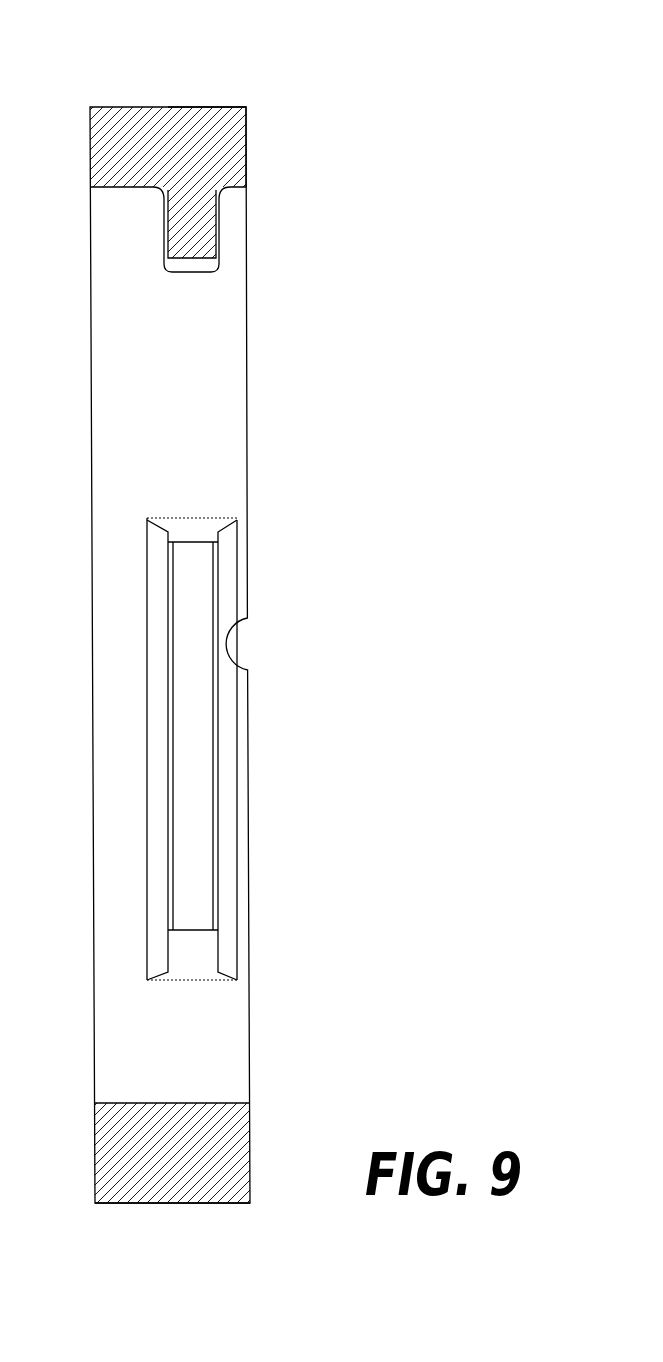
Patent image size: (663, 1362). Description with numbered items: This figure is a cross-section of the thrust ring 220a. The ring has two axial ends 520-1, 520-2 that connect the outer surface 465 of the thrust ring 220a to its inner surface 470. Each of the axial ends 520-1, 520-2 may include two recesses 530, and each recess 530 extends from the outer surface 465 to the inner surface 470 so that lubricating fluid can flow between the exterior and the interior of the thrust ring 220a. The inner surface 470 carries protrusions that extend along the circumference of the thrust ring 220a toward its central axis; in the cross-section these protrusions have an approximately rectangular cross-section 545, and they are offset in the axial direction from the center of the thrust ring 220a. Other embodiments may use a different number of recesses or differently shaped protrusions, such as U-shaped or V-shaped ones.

The thrust ring 220a is at (298, 103).
The axial end 520-1 is at (89, 144).
The axial end 520-2 is at (246, 150).
The rectangular cross-section 545 is at (219, 249).
The recess 530 is at (251, 648).
The inner surface 470 is at (172, 1102).
The outer surface 465 is at (150, 1204).